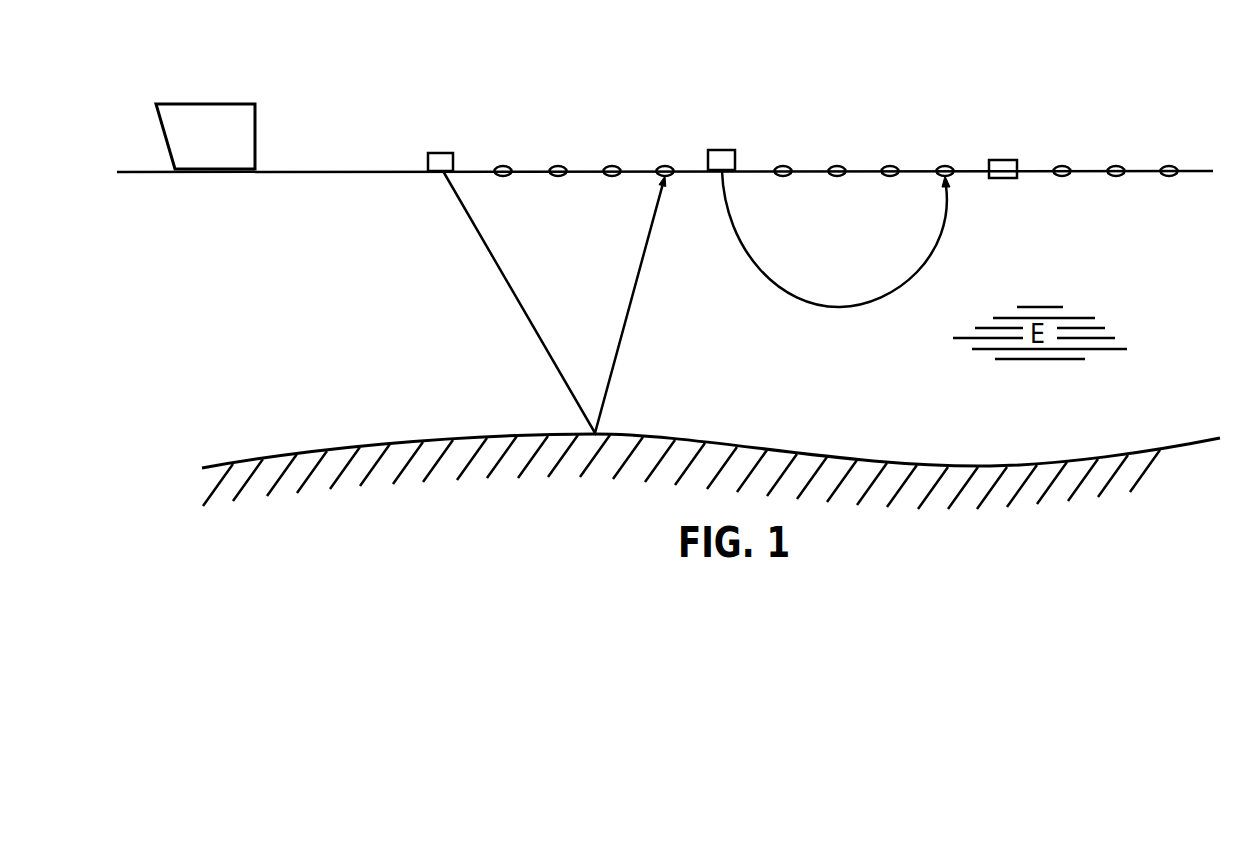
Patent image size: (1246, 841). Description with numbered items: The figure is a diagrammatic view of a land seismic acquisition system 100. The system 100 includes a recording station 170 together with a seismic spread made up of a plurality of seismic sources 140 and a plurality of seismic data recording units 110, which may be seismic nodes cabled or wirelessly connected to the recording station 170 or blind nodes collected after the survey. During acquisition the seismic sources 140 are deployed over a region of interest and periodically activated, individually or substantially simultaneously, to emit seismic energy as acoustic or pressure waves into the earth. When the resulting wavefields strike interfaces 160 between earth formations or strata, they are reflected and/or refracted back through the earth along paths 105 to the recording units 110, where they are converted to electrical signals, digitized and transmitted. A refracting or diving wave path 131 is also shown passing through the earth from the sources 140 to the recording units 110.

The land seismic acquisition system 100 is at (938, 30).
The recording station 170 is at (210, 107).
The seismic sources 140 is at (443, 153).
The seismic data recording units 110 is at (663, 167).
The paths 105 is at (618, 362).
The refracting or diving wave path 131 is at (783, 288).
The interfaces 160 is at (408, 442).